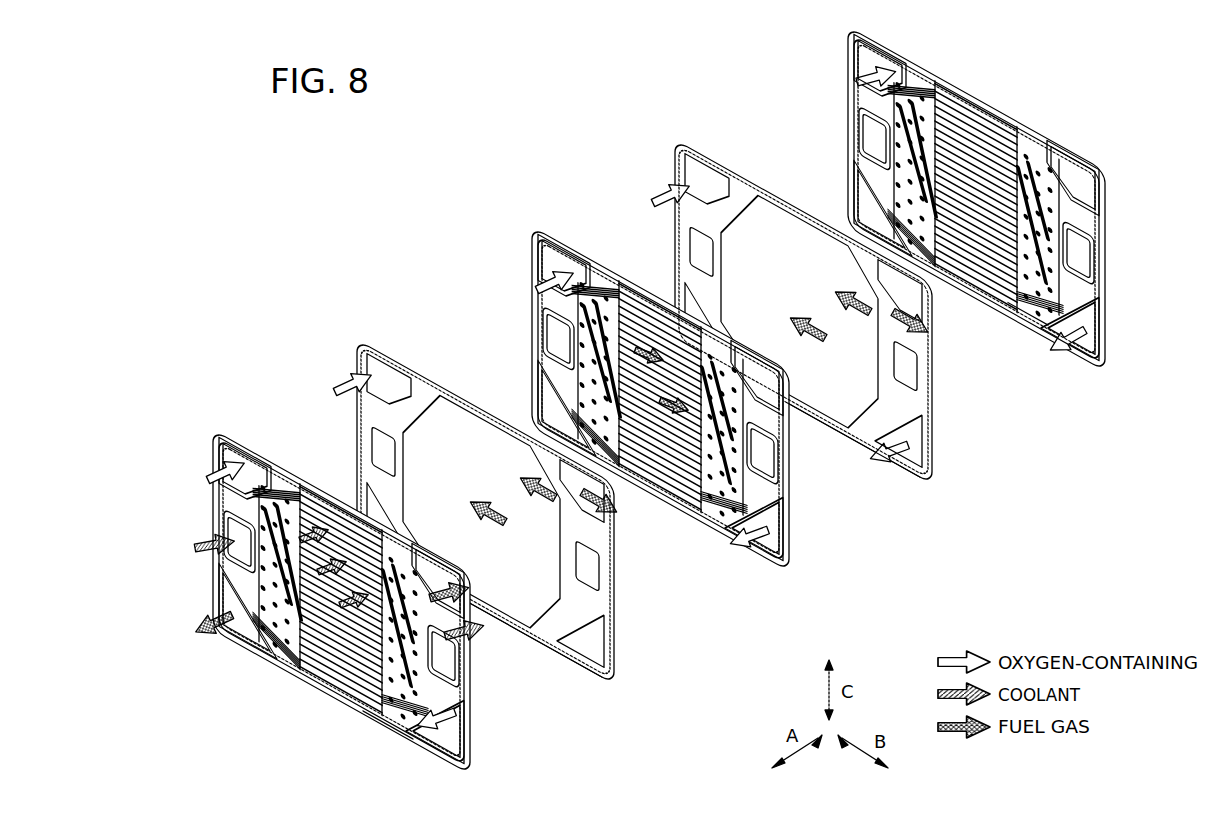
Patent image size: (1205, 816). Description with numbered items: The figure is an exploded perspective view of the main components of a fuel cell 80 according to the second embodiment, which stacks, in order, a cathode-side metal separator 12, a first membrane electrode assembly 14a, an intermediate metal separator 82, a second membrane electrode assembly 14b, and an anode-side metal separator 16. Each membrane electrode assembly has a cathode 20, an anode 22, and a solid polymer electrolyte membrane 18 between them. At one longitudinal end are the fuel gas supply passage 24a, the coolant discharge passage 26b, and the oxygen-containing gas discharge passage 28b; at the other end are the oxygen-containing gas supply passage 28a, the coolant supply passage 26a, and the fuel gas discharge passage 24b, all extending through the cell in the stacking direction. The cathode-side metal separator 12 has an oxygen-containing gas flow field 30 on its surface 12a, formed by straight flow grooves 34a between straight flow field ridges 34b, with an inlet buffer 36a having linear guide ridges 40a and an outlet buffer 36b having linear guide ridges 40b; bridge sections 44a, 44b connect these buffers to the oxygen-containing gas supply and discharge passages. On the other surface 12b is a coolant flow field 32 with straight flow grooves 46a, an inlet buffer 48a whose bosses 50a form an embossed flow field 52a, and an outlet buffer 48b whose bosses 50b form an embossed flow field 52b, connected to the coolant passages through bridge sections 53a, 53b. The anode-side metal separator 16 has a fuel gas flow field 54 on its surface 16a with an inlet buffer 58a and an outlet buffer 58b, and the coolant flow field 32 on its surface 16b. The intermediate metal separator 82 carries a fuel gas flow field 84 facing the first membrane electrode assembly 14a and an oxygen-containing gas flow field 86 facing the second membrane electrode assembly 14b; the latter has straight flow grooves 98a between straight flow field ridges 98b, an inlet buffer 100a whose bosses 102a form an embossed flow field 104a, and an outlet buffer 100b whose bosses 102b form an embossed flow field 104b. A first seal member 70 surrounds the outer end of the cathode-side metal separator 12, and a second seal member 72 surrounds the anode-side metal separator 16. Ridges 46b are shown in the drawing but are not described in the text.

The fuel cell 80 is at (424, 150).
The cathode-side metal separator 12 is at (1119, 165).
The first membrane electrode assembly 14a is at (662, 129).
The second membrane electrode assembly 14b is at (349, 331).
The anode-side metal separator 16 is at (211, 417).
The intermediate metal separator 82 is at (528, 219).
The solid polymer electrolyte membrane 18 is at (910, 472).
The cathode 20 is at (870, 462).
The anode 22 is at (840, 440).
The fuel gas supply passage 24a is at (458, 583).
The fuel gas discharge passage 24b is at (868, 188).
The coolant supply passage 26a is at (868, 130).
The coolant discharge passage 26b is at (448, 678).
The oxygen-containing gas supply passage 28a is at (868, 70).
The oxygen-containing gas discharge passage 28b is at (455, 722).
The oxygen-containing gas flow field 30 is at (992, 140).
The coolant flow field 32 is at (975, 112).
The straight flow grooves 34a is at (962, 265).
The straight flow field ridges 34b is at (992, 280).
The inlet buffer 36a is at (928, 86).
The outlet buffer 36b is at (1040, 160).
The linear guide ridges 40a is at (913, 98).
The linear guide ridges 40b is at (1035, 190).
The bridge section 44a is at (865, 104).
The bridge section 44b is at (1080, 270).
The straight flow grooves 46a is at (345, 680).
The outlet guide ridges 46b is at (325, 668).
The inlet buffer 48a is at (272, 628).
The outlet buffer 48b is at (352, 662).
The bosses 50a is at (905, 225).
The bosses 50b is at (1045, 210).
The embossed flow field 52a is at (262, 565).
The embossed flow field 52b is at (405, 643).
The bridge section 53a is at (240, 505).
The bridge section 53b is at (440, 625).
The fuel gas flow field 54 is at (330, 490).
The inlet buffer 58a is at (372, 740).
The outlet buffer 58b is at (282, 665).
The first seal member 70 is at (1100, 345).
The second seal member 72 is at (467, 760).
The fuel gas flow field 84 is at (657, 292).
The oxygen-containing gas flow field 86 is at (690, 330).
The straight flow grooves 98a is at (662, 490).
The straight flow field ridges 98b is at (640, 470).
The inlet buffer 100a is at (605, 300).
The outlet buffer 100b is at (707, 352).
The bosses 102a is at (548, 333).
The bosses 102b is at (742, 457).
The embossed flow field 104a is at (548, 358).
The embossed flow field 104b is at (730, 413).
The surface 12a is at (1052, 350).
The other surface 12b is at (1021, 335).
The surface 16a is at (412, 745).
The surface 16b is at (437, 768).